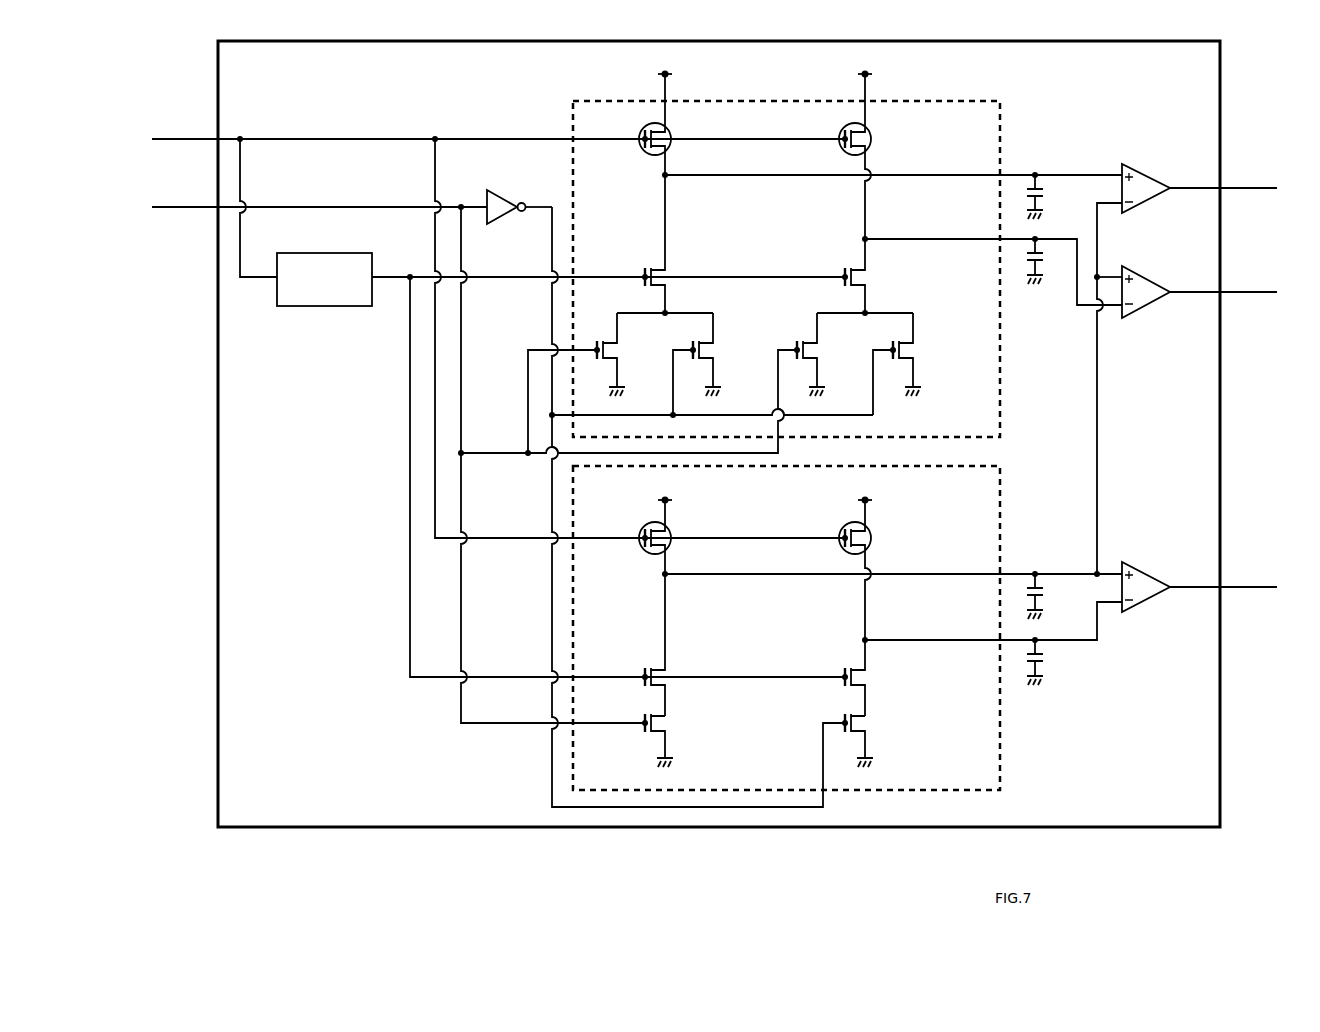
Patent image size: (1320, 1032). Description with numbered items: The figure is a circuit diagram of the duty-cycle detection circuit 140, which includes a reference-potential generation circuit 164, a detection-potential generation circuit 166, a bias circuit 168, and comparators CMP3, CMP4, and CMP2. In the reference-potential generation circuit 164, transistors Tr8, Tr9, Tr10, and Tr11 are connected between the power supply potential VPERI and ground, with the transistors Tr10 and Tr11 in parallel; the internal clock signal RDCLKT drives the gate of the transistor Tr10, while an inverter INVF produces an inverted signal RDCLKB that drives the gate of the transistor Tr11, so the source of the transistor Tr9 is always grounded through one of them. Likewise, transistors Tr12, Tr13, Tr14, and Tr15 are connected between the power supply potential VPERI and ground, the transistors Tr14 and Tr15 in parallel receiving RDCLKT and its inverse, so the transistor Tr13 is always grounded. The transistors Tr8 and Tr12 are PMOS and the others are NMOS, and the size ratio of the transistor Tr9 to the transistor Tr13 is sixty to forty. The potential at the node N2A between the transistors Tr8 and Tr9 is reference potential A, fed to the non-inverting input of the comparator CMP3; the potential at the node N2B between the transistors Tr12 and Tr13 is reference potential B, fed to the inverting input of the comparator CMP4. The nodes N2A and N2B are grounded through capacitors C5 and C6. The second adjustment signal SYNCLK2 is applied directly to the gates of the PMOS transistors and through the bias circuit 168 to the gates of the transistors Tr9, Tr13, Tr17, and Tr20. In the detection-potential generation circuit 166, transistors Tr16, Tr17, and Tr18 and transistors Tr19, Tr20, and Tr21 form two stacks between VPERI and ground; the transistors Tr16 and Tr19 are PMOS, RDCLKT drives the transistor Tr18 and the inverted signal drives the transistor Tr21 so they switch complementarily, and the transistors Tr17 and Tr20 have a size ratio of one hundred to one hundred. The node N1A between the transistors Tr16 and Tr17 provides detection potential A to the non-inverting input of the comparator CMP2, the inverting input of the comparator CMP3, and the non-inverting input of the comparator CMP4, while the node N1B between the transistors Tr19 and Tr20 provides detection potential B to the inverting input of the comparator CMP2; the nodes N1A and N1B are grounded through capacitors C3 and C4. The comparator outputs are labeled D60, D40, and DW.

The duty-cycle detection circuit 140 is at (732, 887).
The reference-potential generation circuit 164 is at (959, 101).
The detection-potential generation circuit 166 is at (1000, 492).
The bias circuit 168 is at (327, 253).
The inverter INVF is at (502, 191).
The transistor Tr8 is at (641, 124).
The transistor Tr9 is at (647, 244).
The transistor Tr10 is at (623, 354).
The transistor Tr11 is at (709, 365).
The transistor Tr12 is at (836, 156).
The transistor Tr13 is at (872, 276).
The transistor Tr14 is at (823, 354).
The transistor Tr15 is at (910, 364).
The transistor Tr16 is at (636, 537).
The transistor Tr17 is at (644, 645).
The transistor Tr18 is at (670, 740).
The transistor Tr19 is at (836, 570).
The transistor Tr20 is at (875, 678).
The transistor Tr21 is at (870, 740).
The capacitor C3 is at (1048, 596).
The capacitor C4 is at (1048, 662).
The capacitor C5 is at (1048, 197).
The capacitor C6 is at (1048, 261).
The comparator CMP2 is at (1144, 569).
The comparator CMP3 is at (1144, 173).
The comparator CMP4 is at (1144, 277).
The node N1A is at (662, 577).
The node N1B is at (864, 641).
The node N2A is at (662, 178).
The node N2B is at (864, 240).
The power supply potential VPERI is at (761, 279).
The second adjustment signal SYNCLK2 is at (457, 140).
The internal clock signal RDCLKT is at (282, 207).
The inverted read clock signal RDCLKB is at (552, 244).
The output signal D60 is at (1240, 189).
The output signal D40 is at (1240, 293).
The output signal DW is at (1238, 588).